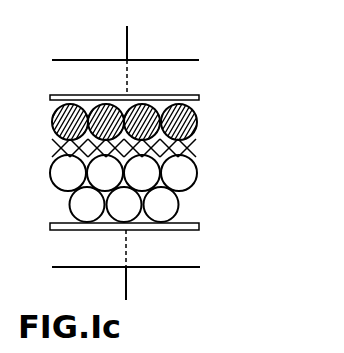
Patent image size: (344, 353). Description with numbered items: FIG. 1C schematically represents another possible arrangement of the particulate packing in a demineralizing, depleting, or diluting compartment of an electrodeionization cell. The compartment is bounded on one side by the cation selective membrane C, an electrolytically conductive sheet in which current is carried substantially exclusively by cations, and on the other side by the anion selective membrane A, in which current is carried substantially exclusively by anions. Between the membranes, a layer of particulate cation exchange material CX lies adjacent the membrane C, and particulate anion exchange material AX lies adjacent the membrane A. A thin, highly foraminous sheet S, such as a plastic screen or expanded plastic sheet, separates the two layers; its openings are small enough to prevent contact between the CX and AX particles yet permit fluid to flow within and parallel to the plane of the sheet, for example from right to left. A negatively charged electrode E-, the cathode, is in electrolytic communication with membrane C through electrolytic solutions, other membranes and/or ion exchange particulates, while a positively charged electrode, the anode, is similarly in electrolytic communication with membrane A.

The negatively charged electrode E- is at (201, 22).
The cation selective membrane C is at (201, 99).
The particulate cation exchange material CX is at (196, 129).
The thin highly foraminous sheet S is at (190, 152).
The particulate anion exchange material AX is at (167, 212).
The anion selective membrane A is at (181, 230).